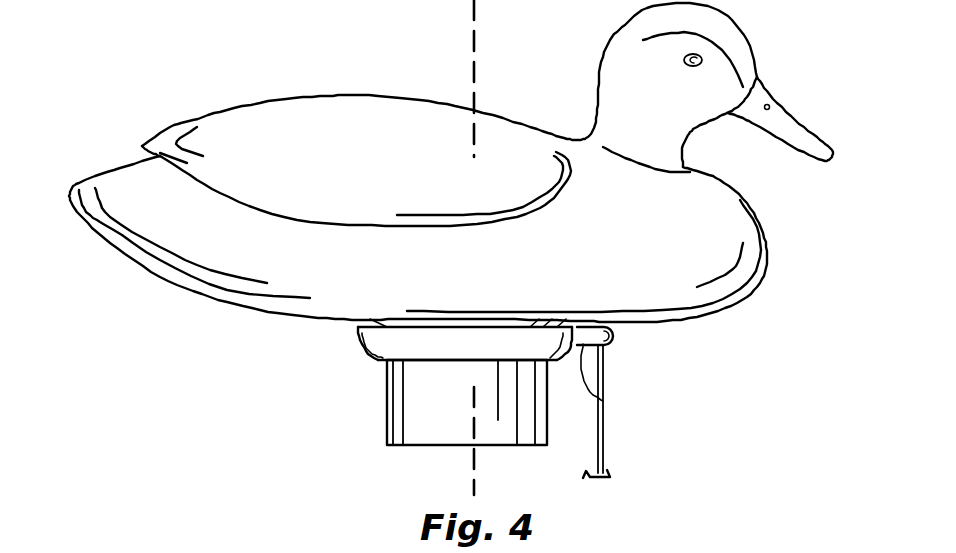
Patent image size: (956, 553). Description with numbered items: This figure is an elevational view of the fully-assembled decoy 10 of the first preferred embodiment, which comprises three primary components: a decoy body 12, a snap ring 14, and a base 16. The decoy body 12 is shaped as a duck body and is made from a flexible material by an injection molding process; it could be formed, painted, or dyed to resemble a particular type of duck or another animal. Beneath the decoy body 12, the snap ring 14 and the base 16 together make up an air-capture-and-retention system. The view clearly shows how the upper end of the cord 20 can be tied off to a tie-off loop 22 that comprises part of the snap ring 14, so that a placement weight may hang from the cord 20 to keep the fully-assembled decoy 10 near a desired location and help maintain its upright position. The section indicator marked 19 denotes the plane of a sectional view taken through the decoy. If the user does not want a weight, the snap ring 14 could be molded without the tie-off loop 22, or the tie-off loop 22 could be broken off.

The fully-assembled decoy 10 is at (285, 79).
The decoy body 12 is at (245, 255).
The snap ring 14 is at (402, 338).
The base 16 is at (423, 400).
The section line 19 is at (507, 33).
The cord 20 is at (603, 428).
The tie-off loop 22 is at (603, 400).